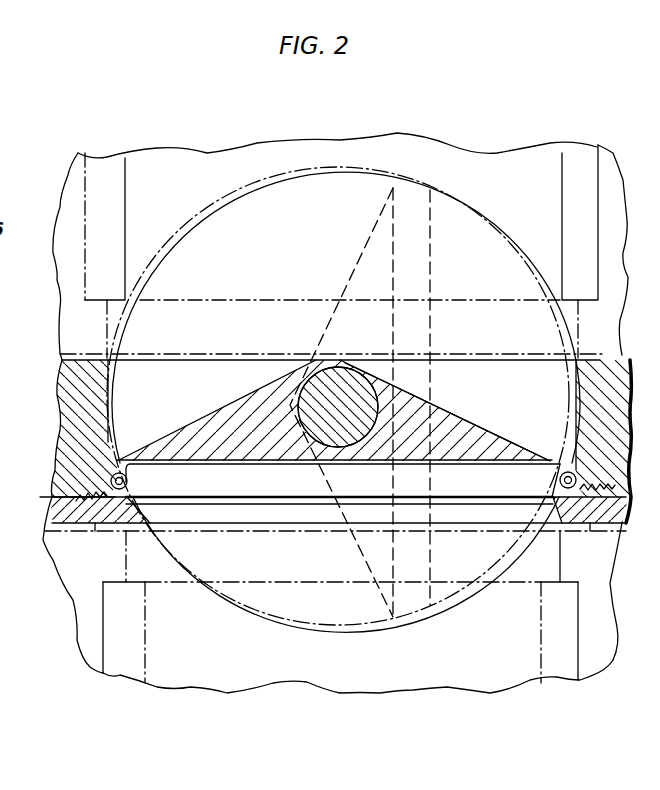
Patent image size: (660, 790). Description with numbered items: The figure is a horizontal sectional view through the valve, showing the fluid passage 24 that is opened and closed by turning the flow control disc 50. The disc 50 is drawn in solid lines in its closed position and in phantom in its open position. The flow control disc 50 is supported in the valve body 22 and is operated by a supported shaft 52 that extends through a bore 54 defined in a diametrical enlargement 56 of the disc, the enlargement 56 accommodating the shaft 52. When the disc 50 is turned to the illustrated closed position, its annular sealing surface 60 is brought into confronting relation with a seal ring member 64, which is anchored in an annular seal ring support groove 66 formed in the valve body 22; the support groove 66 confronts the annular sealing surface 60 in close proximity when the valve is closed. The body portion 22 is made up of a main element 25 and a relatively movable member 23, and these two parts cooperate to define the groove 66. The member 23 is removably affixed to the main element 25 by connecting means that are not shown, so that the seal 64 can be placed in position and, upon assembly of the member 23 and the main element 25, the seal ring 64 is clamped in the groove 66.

The valve body 22 is at (598, 372).
The relatively movable member 23 is at (47, 527).
The fluid passage 24 is at (115, 387).
The main element 25 is at (614, 400).
The flow control disc 50 is at (245, 393).
The shaft 52 is at (333, 367).
The bore 54 is at (372, 367).
The diametrical enlargement 56 is at (442, 416).
The annular sealing surface 60 is at (118, 460).
The seal ring member 64 is at (126, 488).
The annular seal ring support groove 66 is at (100, 512).